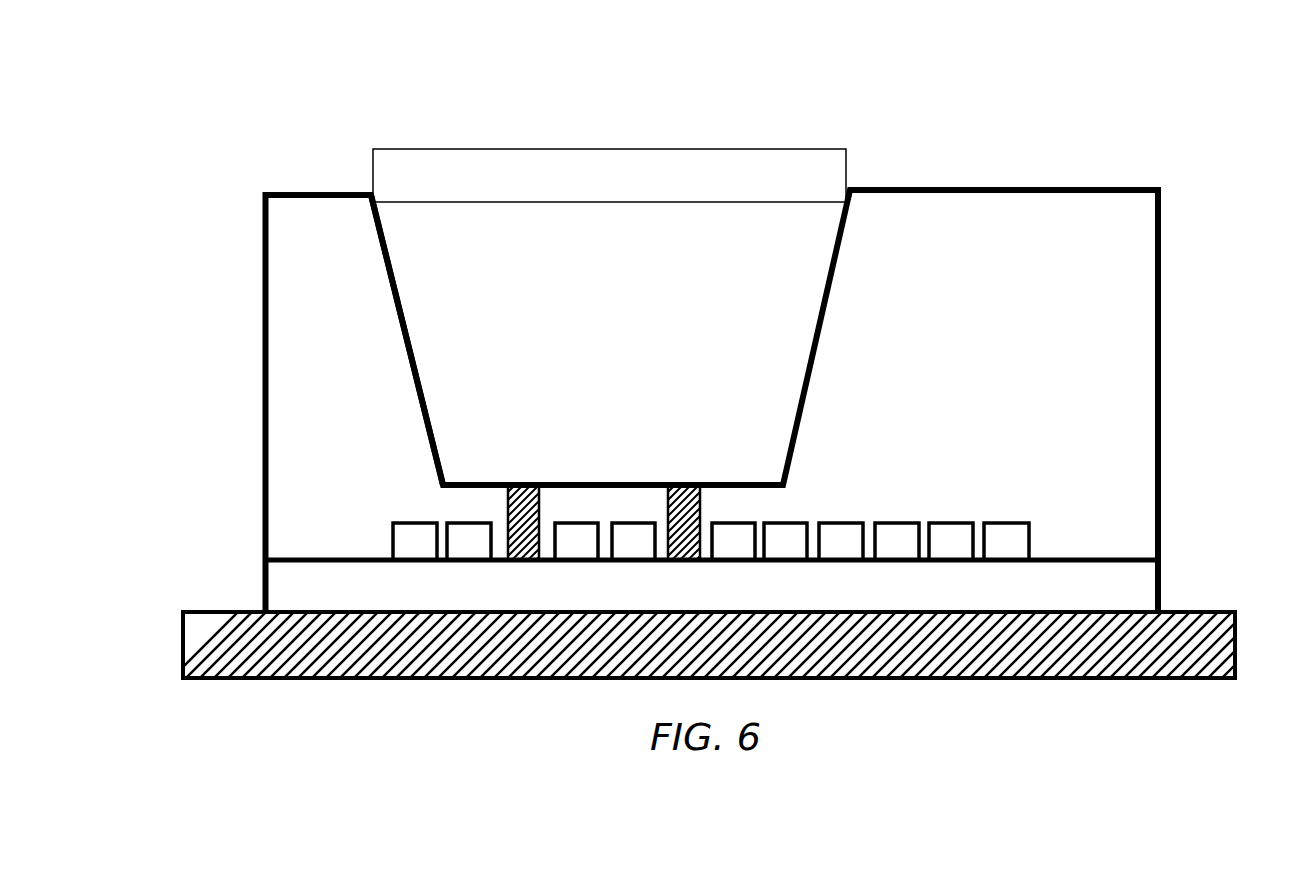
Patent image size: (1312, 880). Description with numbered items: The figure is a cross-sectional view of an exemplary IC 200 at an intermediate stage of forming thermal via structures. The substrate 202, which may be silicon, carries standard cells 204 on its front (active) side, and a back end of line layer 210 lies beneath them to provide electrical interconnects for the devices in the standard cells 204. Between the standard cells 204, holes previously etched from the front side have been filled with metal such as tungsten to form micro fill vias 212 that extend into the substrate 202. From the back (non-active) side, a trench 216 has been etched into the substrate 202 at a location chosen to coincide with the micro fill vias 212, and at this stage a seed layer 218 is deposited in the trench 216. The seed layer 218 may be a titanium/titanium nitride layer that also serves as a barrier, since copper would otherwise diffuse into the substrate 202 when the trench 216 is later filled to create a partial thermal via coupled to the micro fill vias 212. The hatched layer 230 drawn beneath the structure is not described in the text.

The integrated circuit 200 is at (1010, 163).
The substrate 202 is at (946, 292).
The standard cells 204 is at (1013, 521).
The back end of line layer 210 is at (1143, 600).
The micro fill vias 212 is at (519, 484).
The trench 216 is at (729, 146).
The seed layer 218 is at (381, 228).
The heat sink / base substrate 230 is at (1218, 611).